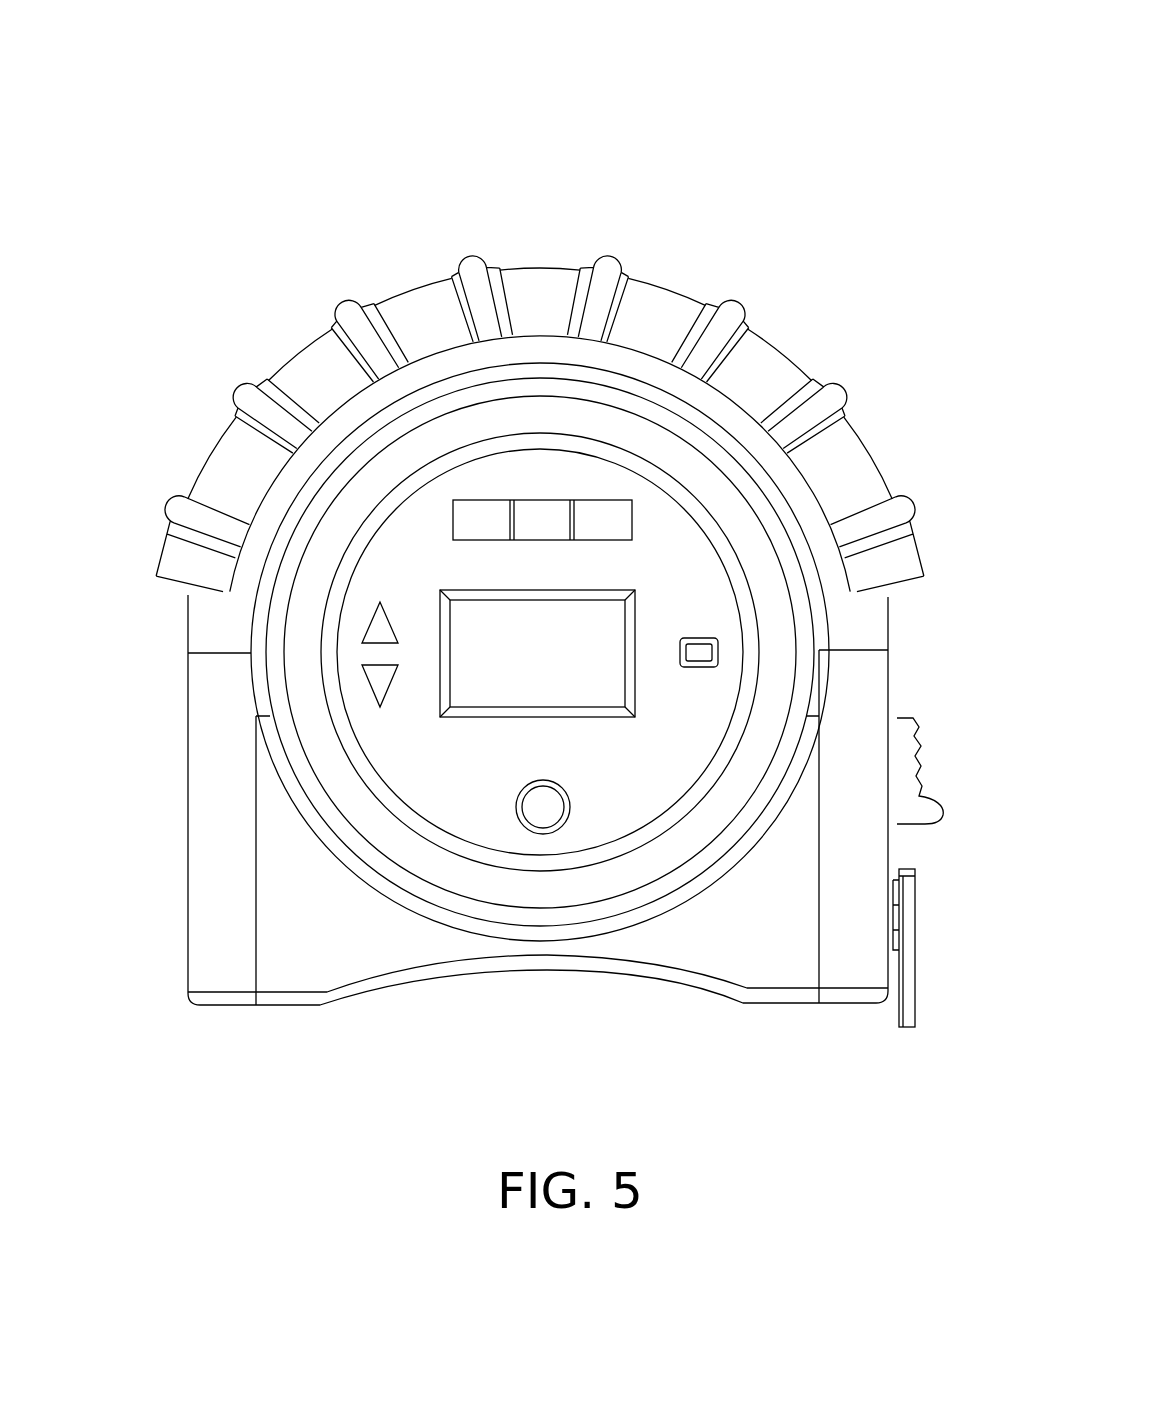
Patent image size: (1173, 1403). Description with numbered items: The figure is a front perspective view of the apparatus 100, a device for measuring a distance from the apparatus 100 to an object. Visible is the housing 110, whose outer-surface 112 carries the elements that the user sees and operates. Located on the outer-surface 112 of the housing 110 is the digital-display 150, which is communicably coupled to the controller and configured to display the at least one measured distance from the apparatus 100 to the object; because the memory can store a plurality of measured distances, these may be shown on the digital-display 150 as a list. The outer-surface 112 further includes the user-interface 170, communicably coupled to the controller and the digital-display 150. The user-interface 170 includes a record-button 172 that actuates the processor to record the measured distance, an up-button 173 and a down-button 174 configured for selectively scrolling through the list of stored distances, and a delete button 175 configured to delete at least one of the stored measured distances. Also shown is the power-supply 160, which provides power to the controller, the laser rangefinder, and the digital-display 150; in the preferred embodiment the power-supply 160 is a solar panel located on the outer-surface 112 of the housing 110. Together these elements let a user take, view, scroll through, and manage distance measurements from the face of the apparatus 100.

The apparatus 100 is at (747, 104).
The housing 110 is at (520, 286).
The outer-surface 112 is at (757, 540).
The digital-display 150 is at (483, 633).
The power-supply 160 is at (553, 523).
The user-interface 170 is at (408, 760).
The record-button 172 is at (548, 822).
The up-button 173 is at (372, 623).
The down-button 174 is at (366, 681).
The delete button 175 is at (720, 653).